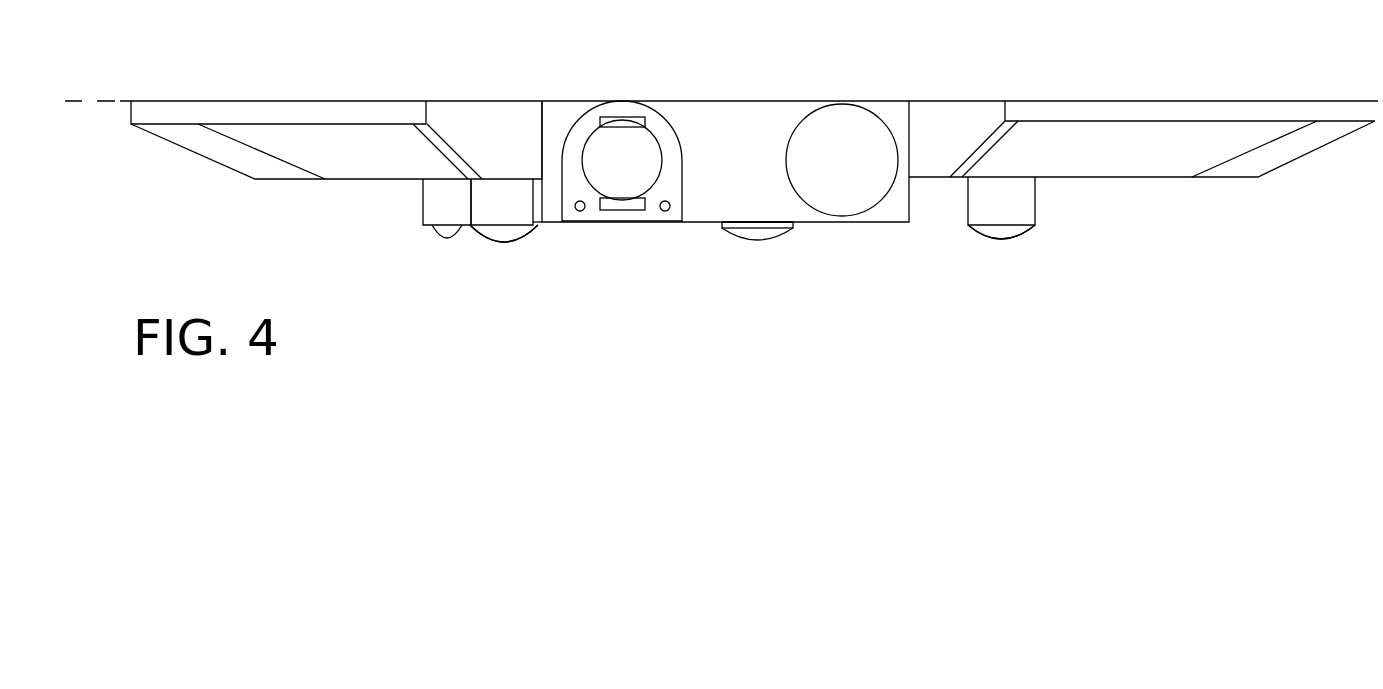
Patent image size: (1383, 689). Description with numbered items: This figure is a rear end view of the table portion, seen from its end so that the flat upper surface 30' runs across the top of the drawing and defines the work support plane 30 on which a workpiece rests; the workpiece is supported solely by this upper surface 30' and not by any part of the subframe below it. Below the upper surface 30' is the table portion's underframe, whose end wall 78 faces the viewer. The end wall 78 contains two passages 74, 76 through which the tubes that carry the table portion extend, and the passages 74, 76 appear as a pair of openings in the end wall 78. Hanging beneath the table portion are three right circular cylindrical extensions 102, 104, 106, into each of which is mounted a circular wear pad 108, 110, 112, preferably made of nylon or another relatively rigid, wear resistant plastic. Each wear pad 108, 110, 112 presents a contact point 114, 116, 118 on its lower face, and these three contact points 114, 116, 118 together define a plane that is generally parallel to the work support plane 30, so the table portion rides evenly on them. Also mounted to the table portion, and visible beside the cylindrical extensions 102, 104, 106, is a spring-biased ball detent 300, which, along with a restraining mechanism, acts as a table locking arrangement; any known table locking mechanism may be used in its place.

The work support plane 30 is at (721, 64).
The upper surface 30' is at (336, 103).
The passage 74 is at (835, 137).
The passage 76 is at (610, 137).
The end wall 78 is at (712, 200).
The right circular cylindrical extension 102 is at (503, 212).
The right circular cylindrical extension 104 is at (767, 222).
The right circular cylindrical extension 106 is at (1022, 202).
The wear pad 108 is at (493, 235).
The wear pad 110 is at (740, 237).
The wear pad 112 is at (1017, 229).
The contact point 114 is at (507, 240).
The contact point 116 is at (757, 240).
The contact point 118 is at (1003, 240).
The spring-biased ball detent 300 is at (440, 234).